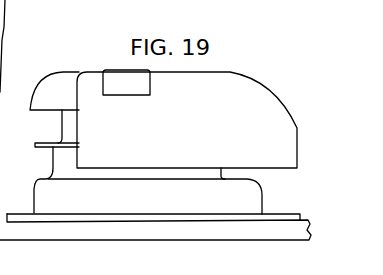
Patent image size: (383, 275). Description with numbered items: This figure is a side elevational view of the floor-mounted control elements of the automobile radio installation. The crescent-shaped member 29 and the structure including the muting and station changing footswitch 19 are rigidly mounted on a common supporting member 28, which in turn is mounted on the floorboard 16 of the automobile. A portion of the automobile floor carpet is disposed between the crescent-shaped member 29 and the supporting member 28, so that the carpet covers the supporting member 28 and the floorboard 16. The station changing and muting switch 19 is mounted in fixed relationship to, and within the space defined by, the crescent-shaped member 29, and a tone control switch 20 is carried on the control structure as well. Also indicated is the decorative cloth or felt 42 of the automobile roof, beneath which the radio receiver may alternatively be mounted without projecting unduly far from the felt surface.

The decorative cloth or felt 42 is at (7, 42).
The muting and station changing switch 19 is at (42, 92).
The tone control switch 20 is at (109, 67).
The crescent-shaped member 29 is at (236, 76).
The supporting member 28 is at (255, 197).
The floorboard 16 is at (223, 233).